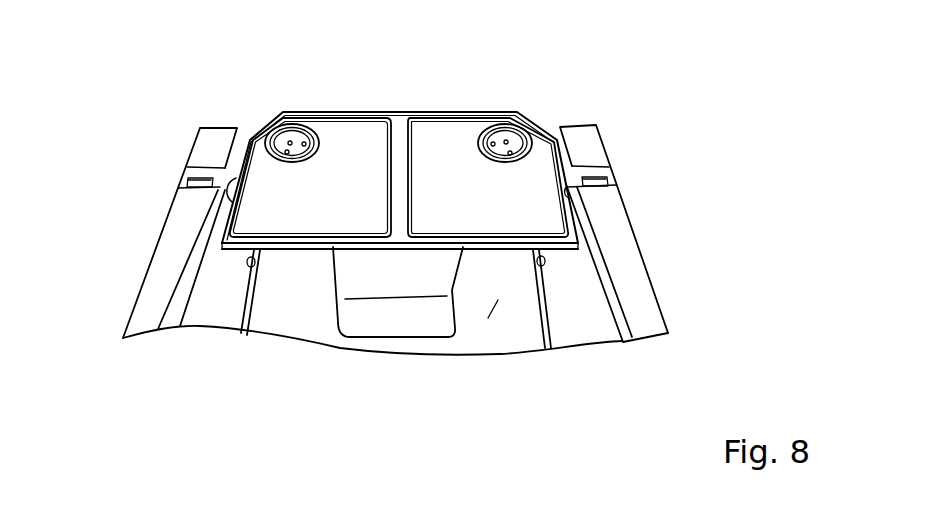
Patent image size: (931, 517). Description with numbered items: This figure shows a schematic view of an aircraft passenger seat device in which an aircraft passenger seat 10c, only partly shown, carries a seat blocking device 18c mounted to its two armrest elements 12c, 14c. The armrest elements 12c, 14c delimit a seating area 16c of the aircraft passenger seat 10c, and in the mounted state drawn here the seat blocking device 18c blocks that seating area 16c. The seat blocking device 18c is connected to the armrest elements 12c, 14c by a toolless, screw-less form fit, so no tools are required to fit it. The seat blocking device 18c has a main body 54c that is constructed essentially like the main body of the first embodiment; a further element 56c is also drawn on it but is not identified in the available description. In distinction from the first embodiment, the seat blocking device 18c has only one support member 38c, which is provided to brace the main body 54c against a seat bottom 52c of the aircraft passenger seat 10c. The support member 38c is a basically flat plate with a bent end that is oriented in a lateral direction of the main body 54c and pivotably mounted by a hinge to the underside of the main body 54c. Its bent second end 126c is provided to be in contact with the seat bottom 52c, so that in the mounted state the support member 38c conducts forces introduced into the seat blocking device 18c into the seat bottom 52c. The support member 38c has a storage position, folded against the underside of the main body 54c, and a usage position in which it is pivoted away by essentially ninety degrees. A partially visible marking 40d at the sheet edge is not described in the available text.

The aircraft passenger seat 10c is at (217, 90).
The armrest element 12c is at (605, 208).
The armrest element 14c is at (175, 242).
The seating area 16c is at (398, 318).
The seat blocking device 18c is at (398, 108).
The support member 38c is at (363, 272).
The seat bottom 52c is at (488, 270).
The main body 54c is at (367, 99).
The second cup holder 56c is at (515, 102).
The second end 126c is at (497, 300).
The compartment 40d is at (526, 511).